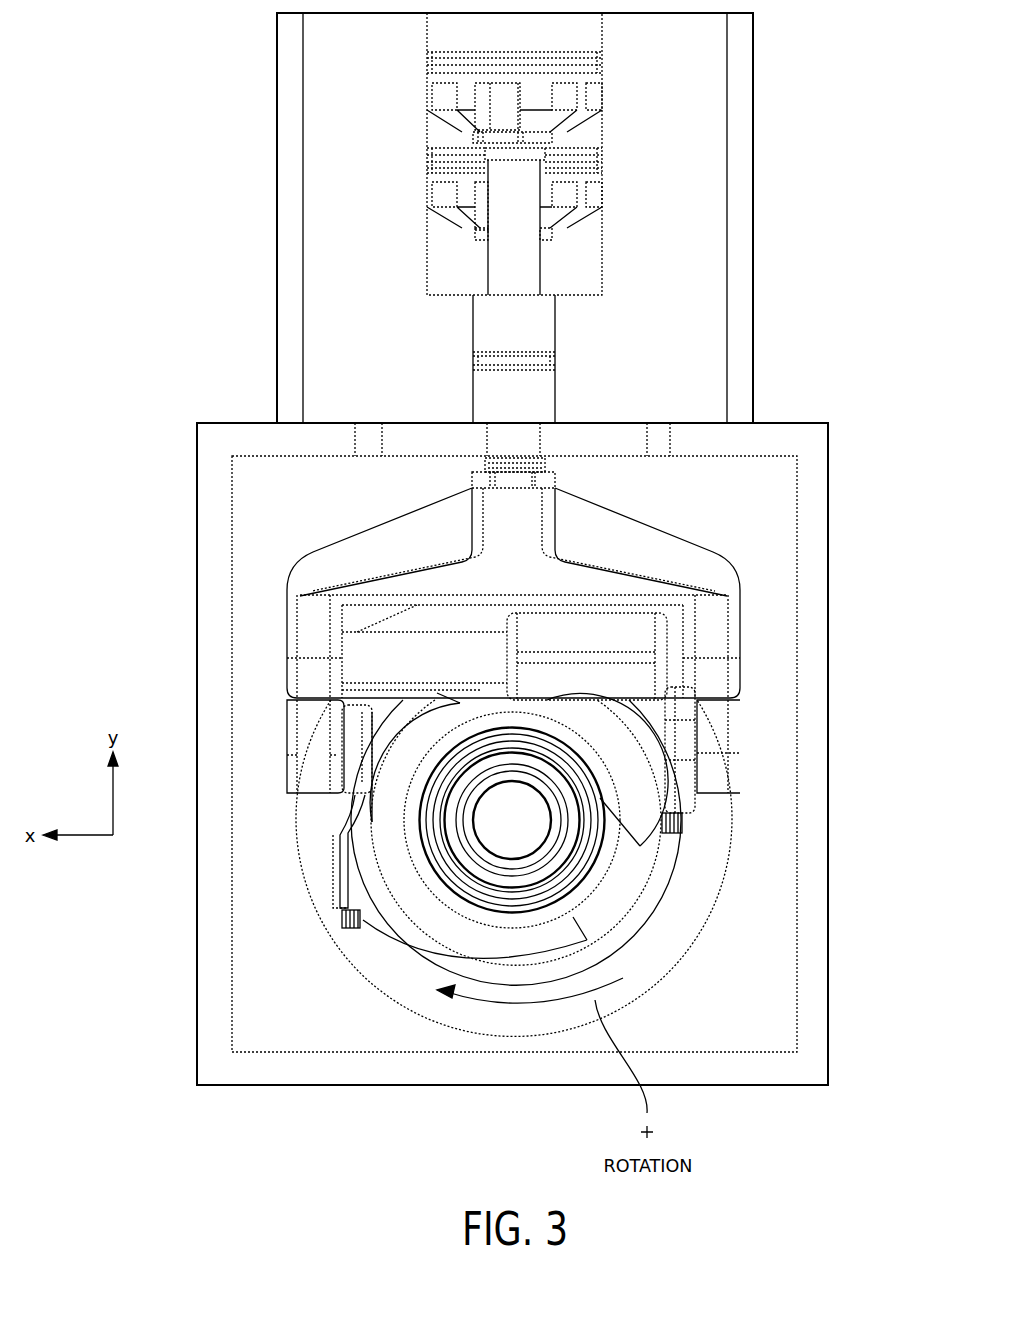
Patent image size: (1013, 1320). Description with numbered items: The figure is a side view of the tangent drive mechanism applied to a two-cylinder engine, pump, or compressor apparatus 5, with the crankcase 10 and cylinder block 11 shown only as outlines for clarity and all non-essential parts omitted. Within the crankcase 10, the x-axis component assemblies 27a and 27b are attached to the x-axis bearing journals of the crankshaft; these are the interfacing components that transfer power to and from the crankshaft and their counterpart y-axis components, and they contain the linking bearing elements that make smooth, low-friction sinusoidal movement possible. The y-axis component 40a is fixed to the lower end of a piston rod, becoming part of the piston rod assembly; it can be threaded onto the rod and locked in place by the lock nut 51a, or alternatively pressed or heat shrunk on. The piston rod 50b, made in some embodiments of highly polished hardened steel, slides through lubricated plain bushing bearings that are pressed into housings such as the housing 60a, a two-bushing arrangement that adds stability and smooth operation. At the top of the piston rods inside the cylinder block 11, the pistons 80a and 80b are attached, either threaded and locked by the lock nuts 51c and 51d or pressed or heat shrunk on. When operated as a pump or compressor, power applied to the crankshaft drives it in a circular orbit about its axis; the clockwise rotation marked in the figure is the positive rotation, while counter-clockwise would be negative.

The apparatus 5 is at (841, 306).
The crankcase 10 is at (817, 715).
The cylinder block 11 is at (747, 182).
The x-axis component assembly 27a is at (637, 638).
The x-axis component assembly 27b is at (333, 852).
The y-axis component 40a is at (642, 540).
The piston rod 50b is at (541, 272).
The lock nut 51a is at (548, 472).
The lock nut 51c is at (553, 140).
The lock nut 51d is at (552, 234).
The housing 60a is at (556, 325).
The piston 80a is at (604, 62).
The piston 80b is at (432, 200).